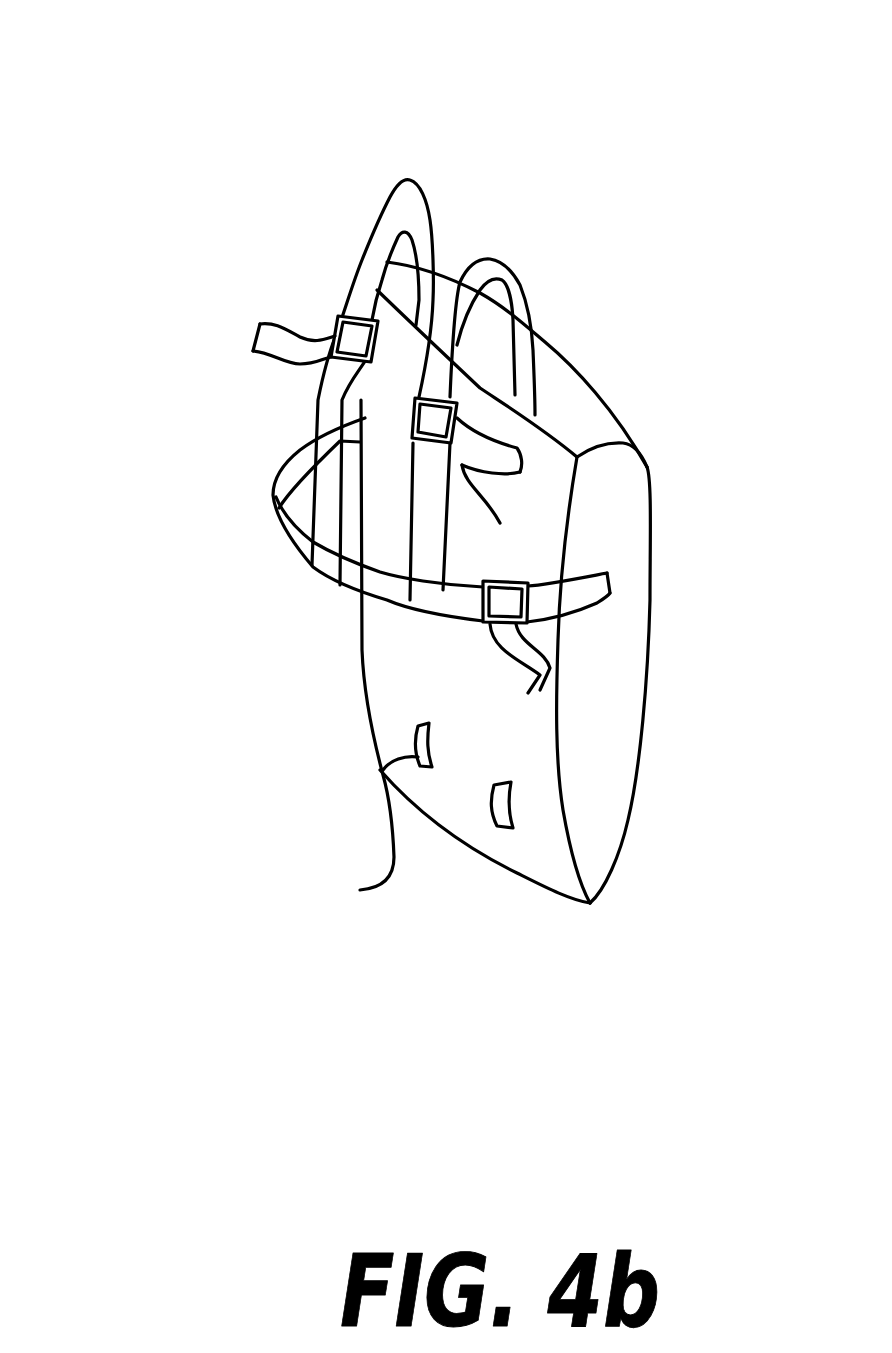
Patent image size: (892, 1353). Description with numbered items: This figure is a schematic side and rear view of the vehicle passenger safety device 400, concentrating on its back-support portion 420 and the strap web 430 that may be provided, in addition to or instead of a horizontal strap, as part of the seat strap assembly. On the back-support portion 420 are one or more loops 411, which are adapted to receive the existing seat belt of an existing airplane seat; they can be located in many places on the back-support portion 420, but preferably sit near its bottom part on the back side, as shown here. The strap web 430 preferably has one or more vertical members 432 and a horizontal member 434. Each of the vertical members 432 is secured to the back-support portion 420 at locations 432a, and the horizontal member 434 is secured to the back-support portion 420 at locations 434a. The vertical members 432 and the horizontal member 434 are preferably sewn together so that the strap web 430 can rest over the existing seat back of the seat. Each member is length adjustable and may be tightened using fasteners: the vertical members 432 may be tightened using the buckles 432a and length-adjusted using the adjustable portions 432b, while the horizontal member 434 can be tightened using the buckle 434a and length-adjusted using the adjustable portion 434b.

The vehicle passenger safety device 400 is at (617, 122).
The loops 411 is at (497, 815).
The back-support portion 420 is at (633, 527).
The strap web 430 is at (330, 389).
The vertical members 432 is at (398, 184).
The buckles 432a is at (435, 275).
The adjustable portions 432b is at (262, 336).
The horizontal member 434 is at (280, 532).
The buckle 434a is at (612, 590).
The adjustable portion 434b is at (380, 750).